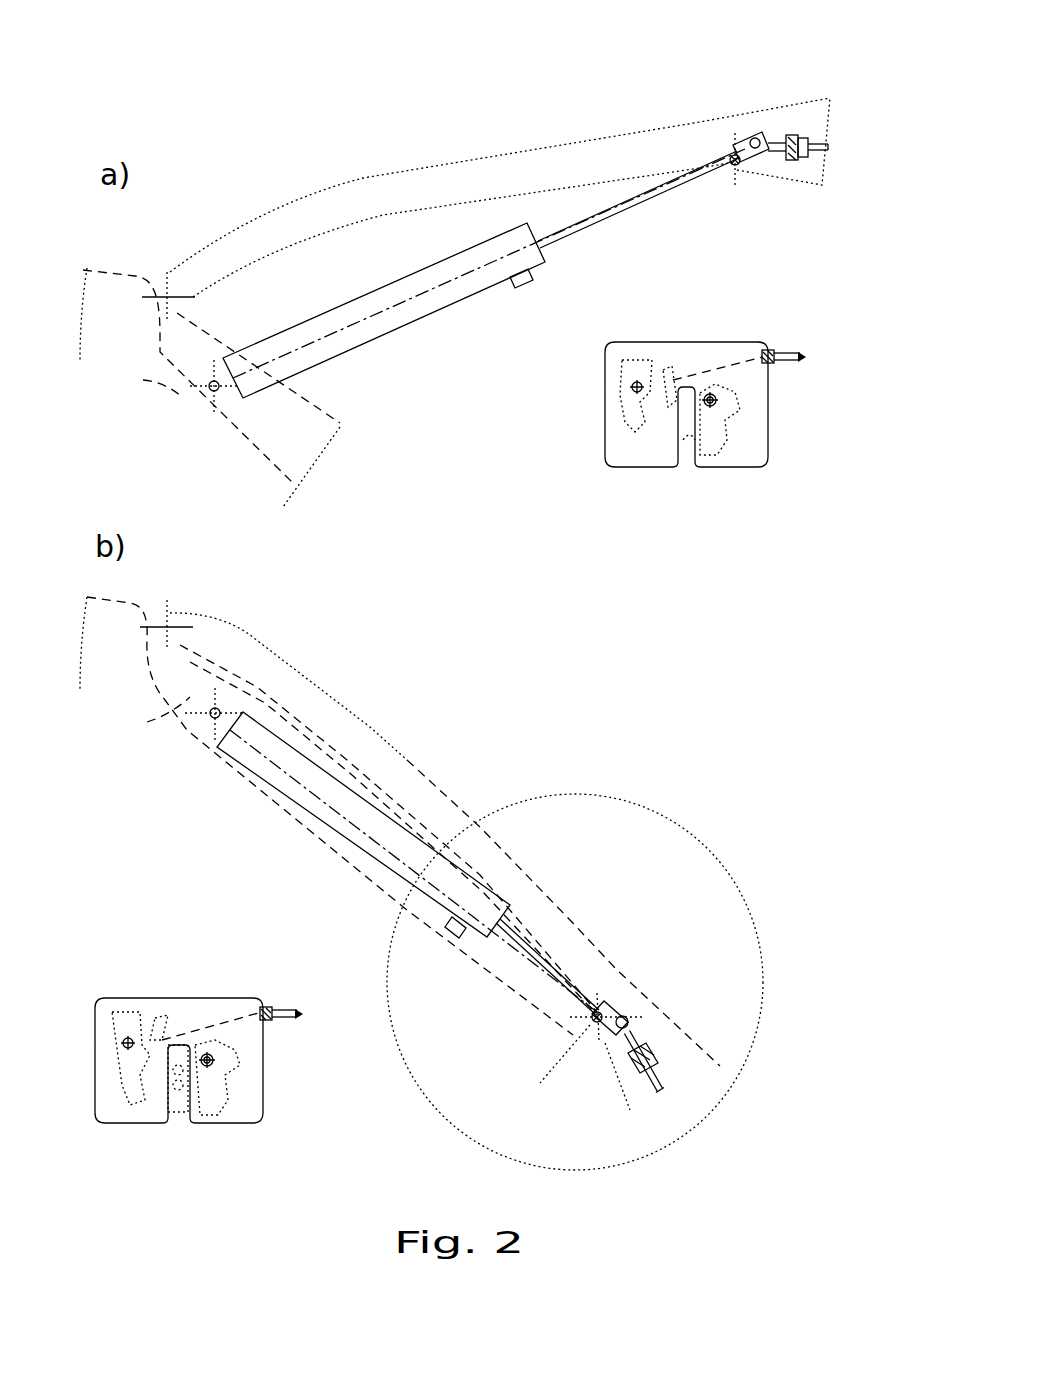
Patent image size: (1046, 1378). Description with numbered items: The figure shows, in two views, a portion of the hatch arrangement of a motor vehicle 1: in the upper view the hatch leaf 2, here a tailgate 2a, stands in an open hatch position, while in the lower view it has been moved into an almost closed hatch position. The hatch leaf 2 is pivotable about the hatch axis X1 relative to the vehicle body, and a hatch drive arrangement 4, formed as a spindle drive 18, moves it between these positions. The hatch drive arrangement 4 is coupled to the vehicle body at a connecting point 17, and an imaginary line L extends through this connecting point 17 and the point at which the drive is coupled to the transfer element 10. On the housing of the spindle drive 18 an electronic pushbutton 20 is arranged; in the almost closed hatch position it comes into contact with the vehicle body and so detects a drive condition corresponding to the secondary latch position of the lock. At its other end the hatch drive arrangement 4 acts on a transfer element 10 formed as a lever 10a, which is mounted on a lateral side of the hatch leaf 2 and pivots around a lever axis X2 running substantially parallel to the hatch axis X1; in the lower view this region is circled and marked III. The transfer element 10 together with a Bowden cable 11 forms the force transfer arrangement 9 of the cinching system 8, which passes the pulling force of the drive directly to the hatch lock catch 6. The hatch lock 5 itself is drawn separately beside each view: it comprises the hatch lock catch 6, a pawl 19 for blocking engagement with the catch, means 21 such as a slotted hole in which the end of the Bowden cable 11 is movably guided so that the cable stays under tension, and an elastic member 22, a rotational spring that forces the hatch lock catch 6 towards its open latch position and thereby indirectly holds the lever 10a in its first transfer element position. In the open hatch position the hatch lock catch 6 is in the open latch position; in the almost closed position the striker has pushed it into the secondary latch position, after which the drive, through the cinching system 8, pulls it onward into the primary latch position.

The motor vehicle 1 is at (168, 150).
The hatch leaf 2 is at (362, 178).
The tailgate 2a is at (362, 178).
The hatch drive arrangement 4 is at (449, 352).
The spindle drive 18 is at (449, 352).
The hatch lock 5 is at (613, 325).
The hatch lock catch 6 is at (737, 468).
The cinching system 8 is at (575, 98).
The force transfer arrangement 9 is at (796, 106).
The transfer element 10 is at (752, 162).
The lever 10a is at (752, 162).
The Bowden cable 11 is at (826, 138).
The connecting point 17 is at (213, 389).
The pawl 19 is at (613, 421).
The electronic pushbutton 20 is at (526, 290).
The means for movably attaching the Bowden cable 21 is at (673, 377).
The elastic member 22 is at (740, 400).
The hatch axis X1 is at (165, 290).
The lever axis X2 is at (734, 163).
The imaginary line L is at (154, 555).
The detail III is at (747, 842).